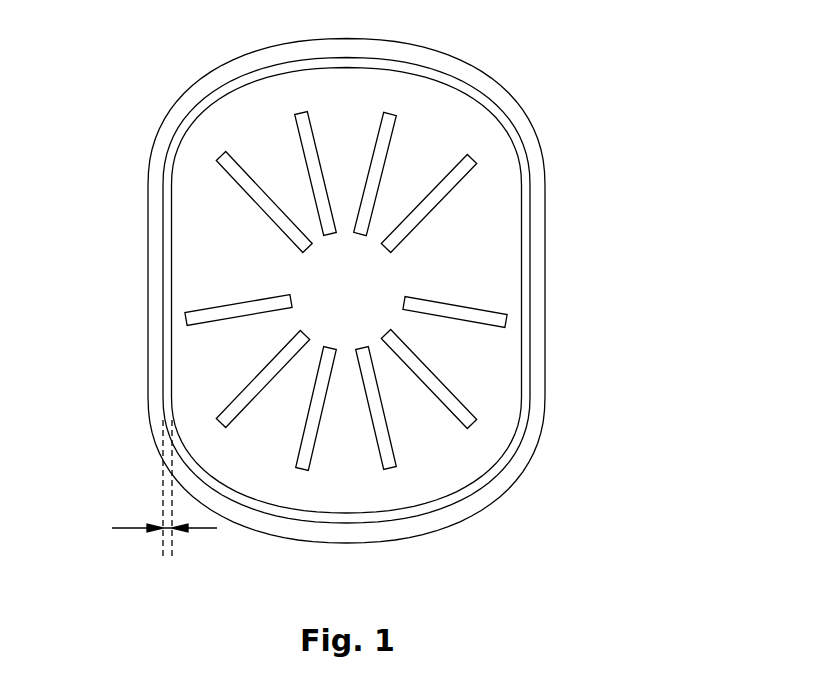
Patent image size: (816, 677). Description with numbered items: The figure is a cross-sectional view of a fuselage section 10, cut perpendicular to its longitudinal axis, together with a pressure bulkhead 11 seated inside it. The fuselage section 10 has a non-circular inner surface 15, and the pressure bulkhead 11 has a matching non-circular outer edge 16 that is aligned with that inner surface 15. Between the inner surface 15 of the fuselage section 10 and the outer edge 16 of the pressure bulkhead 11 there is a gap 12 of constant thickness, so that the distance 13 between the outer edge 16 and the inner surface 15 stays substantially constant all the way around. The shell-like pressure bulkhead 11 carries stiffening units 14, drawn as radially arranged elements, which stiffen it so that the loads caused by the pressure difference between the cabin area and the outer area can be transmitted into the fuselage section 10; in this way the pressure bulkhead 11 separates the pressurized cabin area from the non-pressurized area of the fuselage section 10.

The fuselage section 10 is at (527, 140).
The pressure bulkhead 11 is at (503, 247).
The gap 12 is at (218, 95).
The distance 13 is at (168, 548).
The stiffening units 14 is at (474, 418).
The non-circular inner surface 15 is at (177, 160).
The non-circular outer edge 16 is at (173, 374).